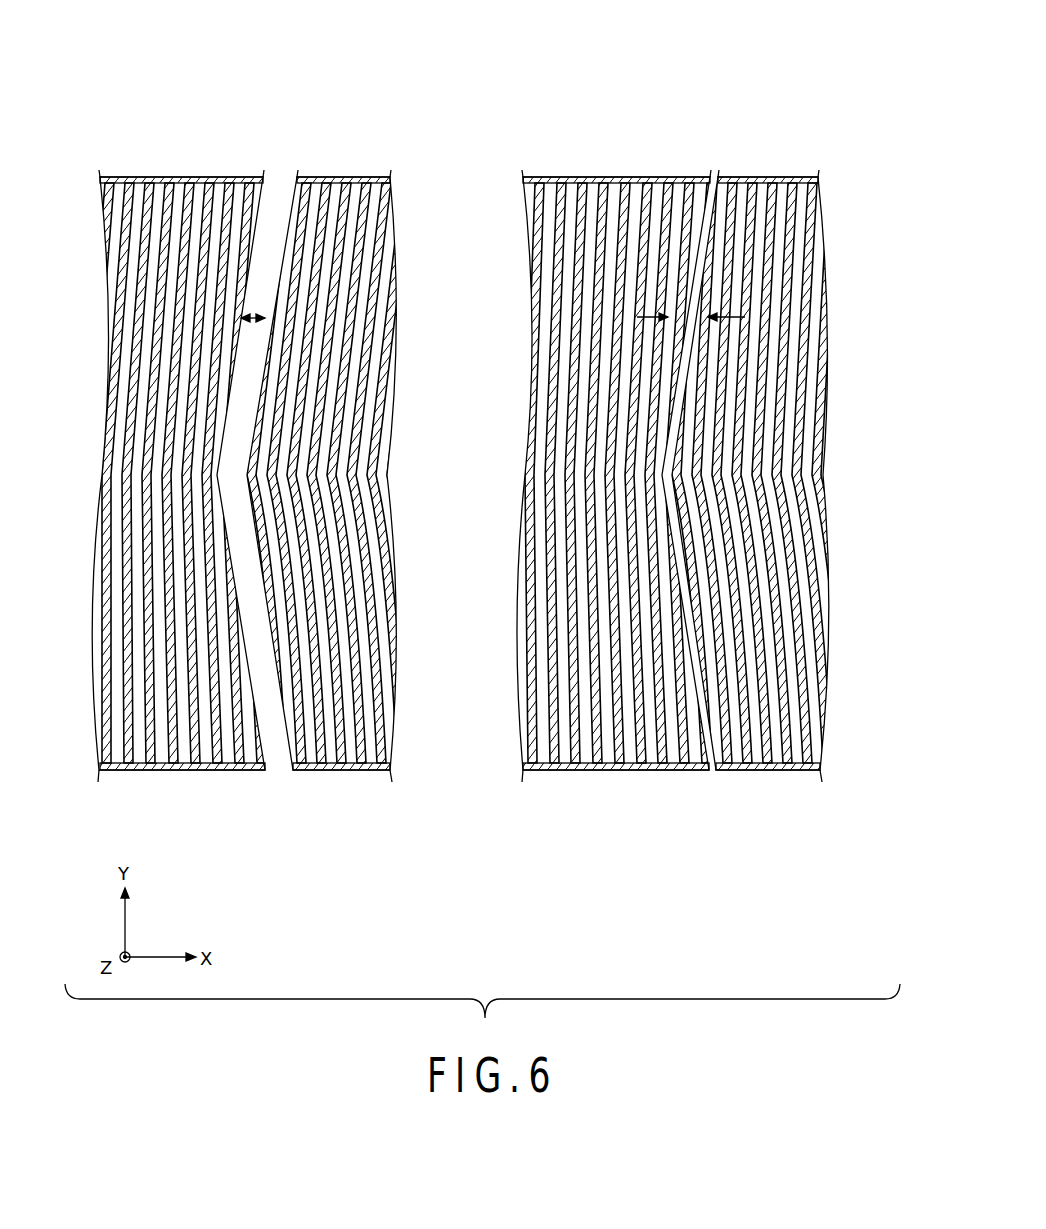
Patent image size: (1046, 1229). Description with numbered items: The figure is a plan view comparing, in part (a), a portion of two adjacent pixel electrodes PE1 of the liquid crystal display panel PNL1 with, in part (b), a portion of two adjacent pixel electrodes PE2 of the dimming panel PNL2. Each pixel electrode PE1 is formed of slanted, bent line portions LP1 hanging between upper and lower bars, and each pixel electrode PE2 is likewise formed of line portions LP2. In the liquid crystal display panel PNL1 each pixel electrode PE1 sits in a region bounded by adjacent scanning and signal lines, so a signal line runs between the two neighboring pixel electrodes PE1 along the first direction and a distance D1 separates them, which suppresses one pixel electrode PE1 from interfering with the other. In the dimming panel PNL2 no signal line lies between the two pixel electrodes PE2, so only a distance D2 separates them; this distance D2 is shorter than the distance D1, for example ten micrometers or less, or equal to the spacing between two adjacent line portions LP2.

The liquid crystal display panel PNL1 is at (393, 94).
The dimming panel PNL2 is at (831, 94).
The pixel electrode PE1 is at (188, 177).
The line portion LP1 is at (247, 183).
The distance D1 is at (258, 312).
The pixel electrode PE2 is at (606, 177).
The line portion LP2 is at (688, 198).
The distance D2 is at (696, 310).